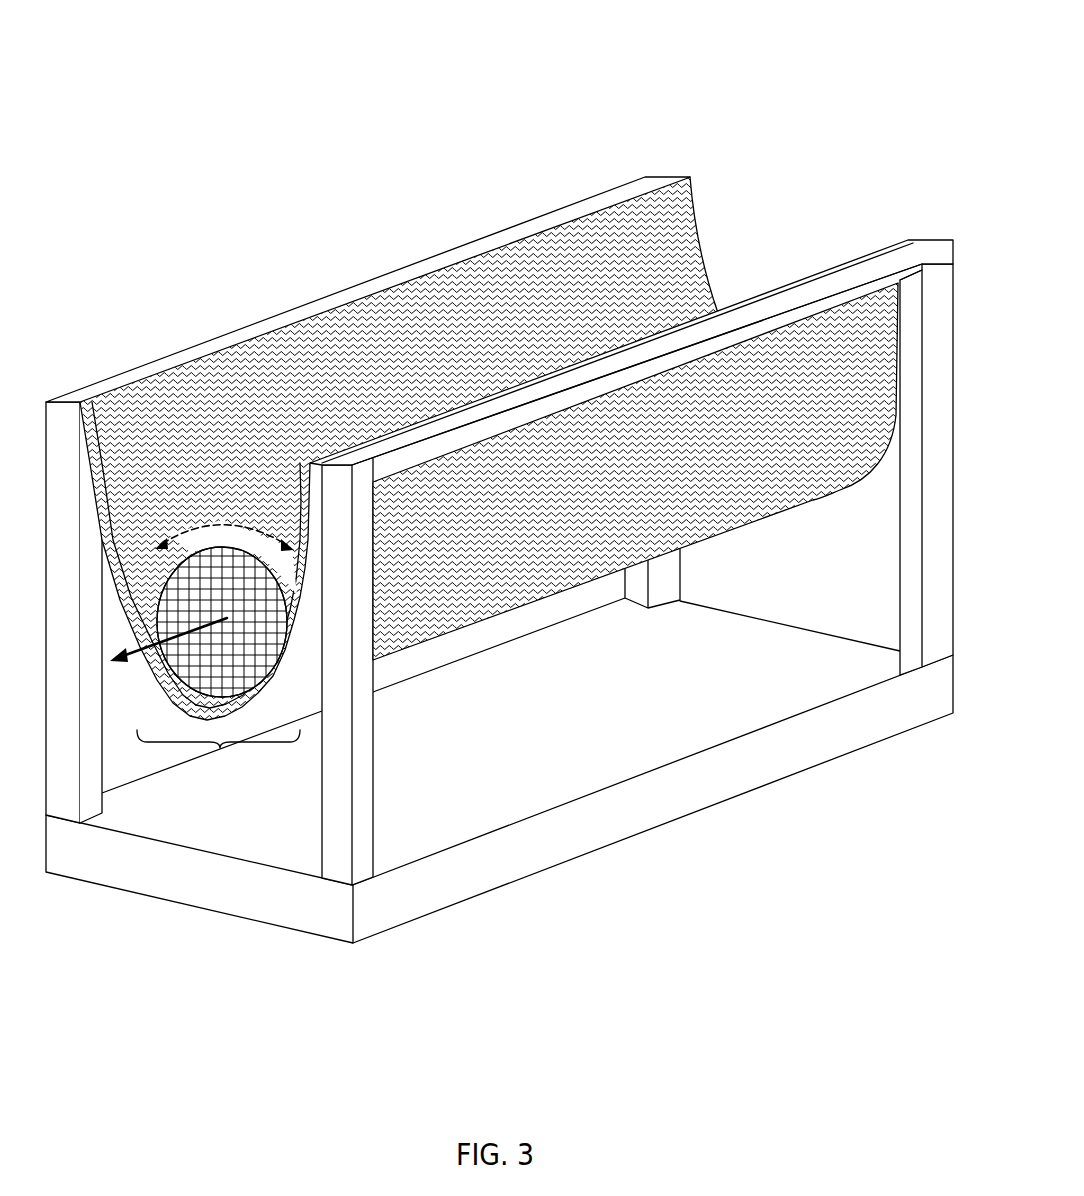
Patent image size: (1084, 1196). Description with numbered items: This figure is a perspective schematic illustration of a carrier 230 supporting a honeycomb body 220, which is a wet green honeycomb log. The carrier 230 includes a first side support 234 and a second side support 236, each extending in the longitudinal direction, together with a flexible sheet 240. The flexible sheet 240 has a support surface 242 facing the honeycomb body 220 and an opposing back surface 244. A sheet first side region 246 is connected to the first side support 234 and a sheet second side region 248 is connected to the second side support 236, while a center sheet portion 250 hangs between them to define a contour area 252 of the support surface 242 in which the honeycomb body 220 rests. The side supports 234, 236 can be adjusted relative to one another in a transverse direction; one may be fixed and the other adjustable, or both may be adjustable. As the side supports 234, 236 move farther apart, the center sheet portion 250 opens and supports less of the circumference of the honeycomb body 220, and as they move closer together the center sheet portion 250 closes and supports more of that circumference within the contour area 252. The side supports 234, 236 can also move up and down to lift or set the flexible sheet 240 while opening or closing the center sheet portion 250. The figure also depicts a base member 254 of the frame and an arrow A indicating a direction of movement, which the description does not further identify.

The honeycomb body 220 is at (280, 523).
The carrier 230 is at (499, 603).
The first side support 234 is at (608, 196).
The second side support 236 is at (778, 300).
The flexible sheet 240 is at (672, 283).
The support surface 242 is at (170, 672).
The back surface 244 is at (712, 530).
The sheet first side region 246 is at (368, 303).
The sheet second side region 248 is at (502, 380).
The center sheet portion 250 is at (220, 748).
The contour area 252 is at (178, 537).
The base 254 is at (618, 818).
The direction A is at (133, 647).